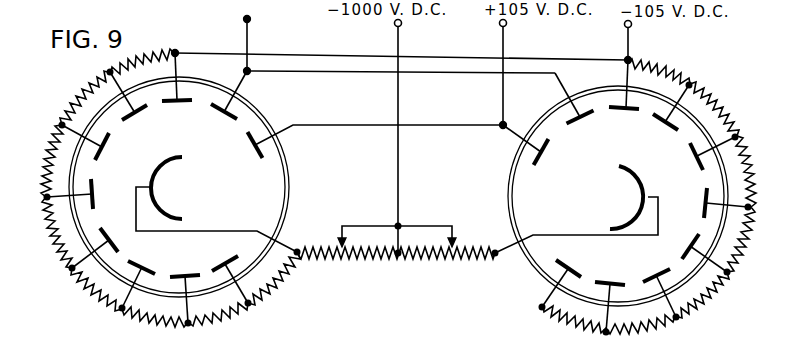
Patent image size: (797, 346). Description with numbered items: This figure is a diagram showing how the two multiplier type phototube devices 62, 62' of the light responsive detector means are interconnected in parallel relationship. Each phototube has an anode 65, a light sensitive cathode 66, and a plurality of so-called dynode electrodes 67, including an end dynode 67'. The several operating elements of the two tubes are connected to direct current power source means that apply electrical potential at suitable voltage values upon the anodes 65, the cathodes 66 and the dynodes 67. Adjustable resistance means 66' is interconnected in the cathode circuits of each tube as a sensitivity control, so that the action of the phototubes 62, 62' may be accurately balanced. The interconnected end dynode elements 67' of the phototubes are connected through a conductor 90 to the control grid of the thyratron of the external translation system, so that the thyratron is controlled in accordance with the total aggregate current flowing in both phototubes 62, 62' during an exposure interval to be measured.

The conductor 90 is at (243, 41).
The phototube device 62 is at (198, 187).
The phototube device 62' is at (587, 196).
The anode 65 is at (250, 148).
The light sensitive cathode 66 is at (397, 205).
The adjustable resistance means 66' is at (396, 265).
The dynode electrodes 67 is at (397, 192).
The end dynode 67' is at (419, 104).